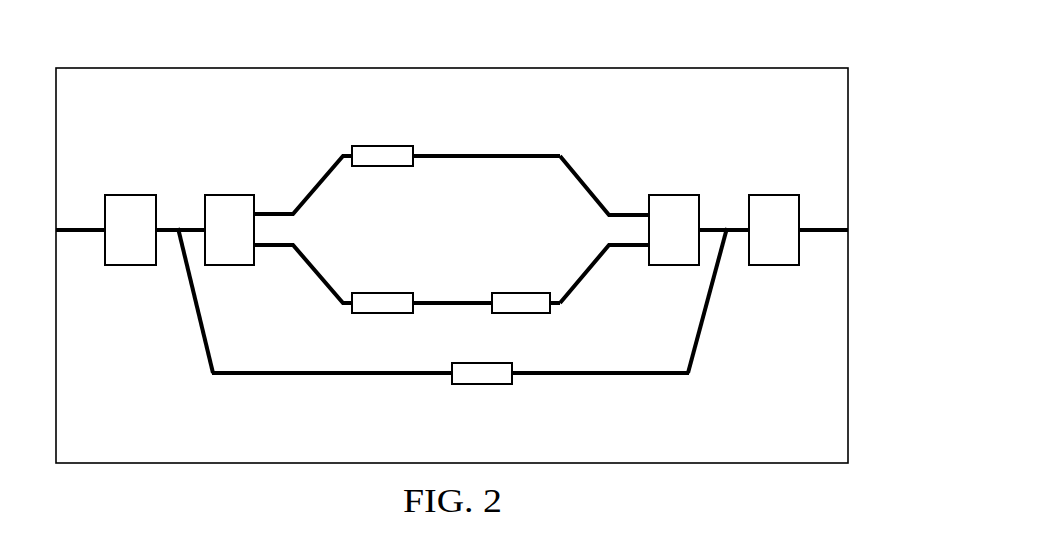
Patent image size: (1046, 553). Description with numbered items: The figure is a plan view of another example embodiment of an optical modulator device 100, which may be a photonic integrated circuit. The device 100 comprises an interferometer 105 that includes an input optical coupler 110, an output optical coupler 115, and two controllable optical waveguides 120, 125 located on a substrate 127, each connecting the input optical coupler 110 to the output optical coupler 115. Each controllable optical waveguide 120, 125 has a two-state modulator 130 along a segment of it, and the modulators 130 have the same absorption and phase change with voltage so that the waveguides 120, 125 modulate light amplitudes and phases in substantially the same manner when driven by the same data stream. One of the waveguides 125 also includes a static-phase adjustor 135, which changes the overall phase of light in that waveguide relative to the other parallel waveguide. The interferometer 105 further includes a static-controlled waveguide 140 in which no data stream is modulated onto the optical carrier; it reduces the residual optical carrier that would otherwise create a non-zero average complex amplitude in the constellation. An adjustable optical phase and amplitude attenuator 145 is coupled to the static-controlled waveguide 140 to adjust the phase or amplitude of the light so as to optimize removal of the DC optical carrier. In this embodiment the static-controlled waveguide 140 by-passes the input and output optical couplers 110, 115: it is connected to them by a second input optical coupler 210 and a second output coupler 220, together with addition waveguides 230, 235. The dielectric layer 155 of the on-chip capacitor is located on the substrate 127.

The optical modulator device 100 is at (683, 62).
The interferometer 105 is at (451, 264).
The input optical coupler 110 is at (248, 243).
The output optical coupler 115 is at (693, 243).
The controllable optical waveguide 120 is at (588, 190).
The controllable optical waveguide 125 is at (588, 269).
The substrate 127 is at (470, 433).
The two-state modulator 130 is at (383, 146).
The static-phase adjustor 135 is at (522, 315).
The static-controlled waveguide 140 is at (600, 375).
The adjustable optical phase and amplitude attenuator 145 is at (482, 363).
The dielectric layer 155 is at (469, 121).
The second input optical coupler 210 is at (149, 243).
The second output coupler 220 is at (793, 243).
The addition waveguide 230 is at (168, 227).
The addition waveguide 235 is at (713, 227).